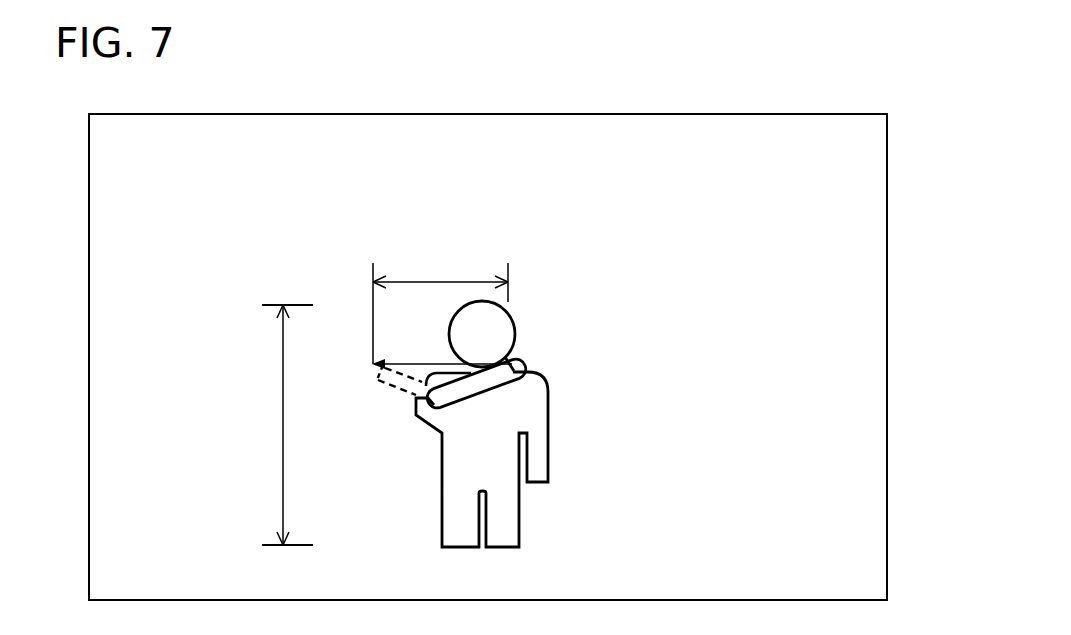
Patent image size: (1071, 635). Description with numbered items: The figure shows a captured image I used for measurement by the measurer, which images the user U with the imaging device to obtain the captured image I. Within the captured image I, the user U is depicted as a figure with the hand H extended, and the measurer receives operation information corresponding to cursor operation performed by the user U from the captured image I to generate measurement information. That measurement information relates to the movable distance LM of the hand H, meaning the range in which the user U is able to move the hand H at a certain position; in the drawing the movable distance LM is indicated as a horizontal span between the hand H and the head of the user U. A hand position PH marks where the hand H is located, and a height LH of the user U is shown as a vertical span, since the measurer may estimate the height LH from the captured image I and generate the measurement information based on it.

The captured image I is at (888, 172).
The user U is at (549, 402).
The hand H is at (380, 383).
The hand position PH is at (374, 364).
The movable distance LM is at (440, 312).
The height LH is at (277, 425).